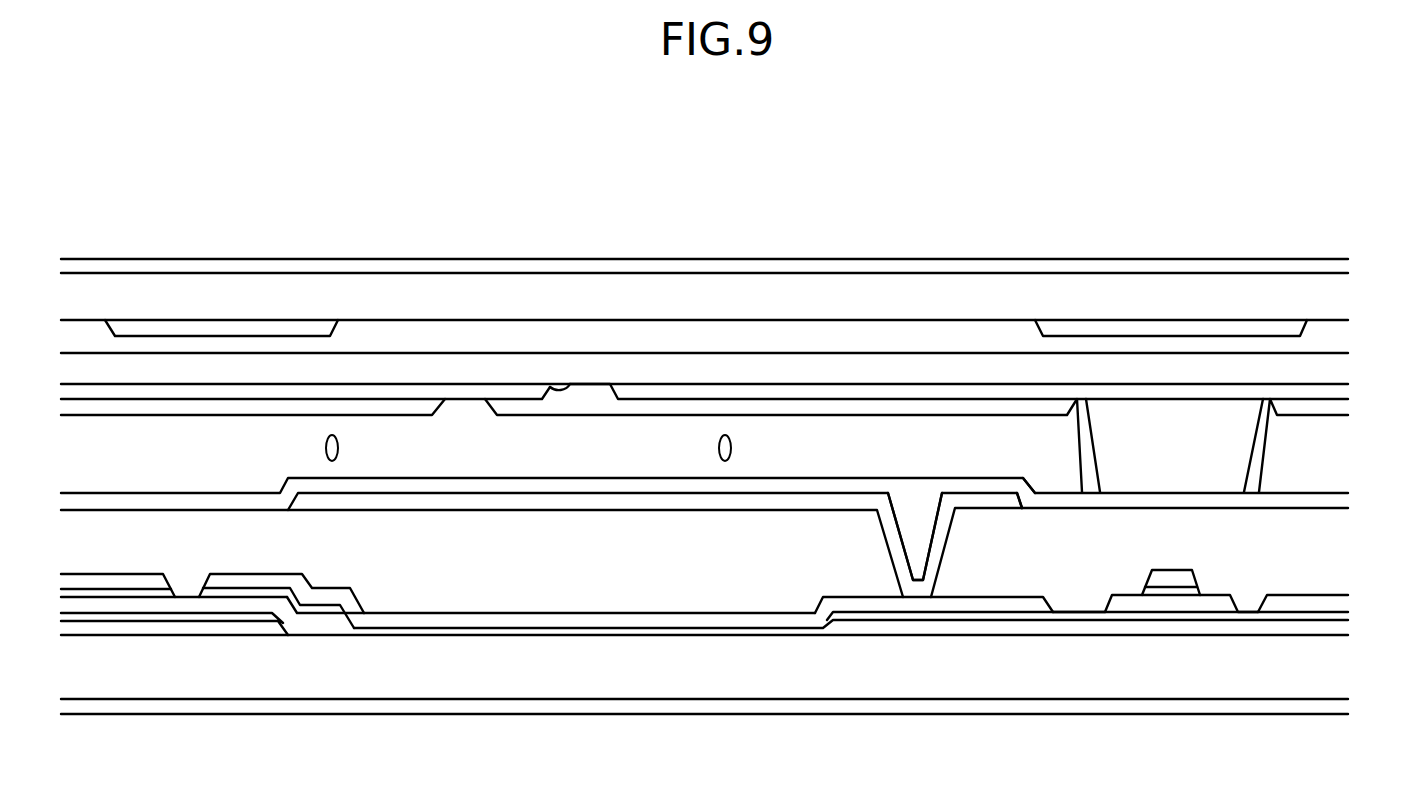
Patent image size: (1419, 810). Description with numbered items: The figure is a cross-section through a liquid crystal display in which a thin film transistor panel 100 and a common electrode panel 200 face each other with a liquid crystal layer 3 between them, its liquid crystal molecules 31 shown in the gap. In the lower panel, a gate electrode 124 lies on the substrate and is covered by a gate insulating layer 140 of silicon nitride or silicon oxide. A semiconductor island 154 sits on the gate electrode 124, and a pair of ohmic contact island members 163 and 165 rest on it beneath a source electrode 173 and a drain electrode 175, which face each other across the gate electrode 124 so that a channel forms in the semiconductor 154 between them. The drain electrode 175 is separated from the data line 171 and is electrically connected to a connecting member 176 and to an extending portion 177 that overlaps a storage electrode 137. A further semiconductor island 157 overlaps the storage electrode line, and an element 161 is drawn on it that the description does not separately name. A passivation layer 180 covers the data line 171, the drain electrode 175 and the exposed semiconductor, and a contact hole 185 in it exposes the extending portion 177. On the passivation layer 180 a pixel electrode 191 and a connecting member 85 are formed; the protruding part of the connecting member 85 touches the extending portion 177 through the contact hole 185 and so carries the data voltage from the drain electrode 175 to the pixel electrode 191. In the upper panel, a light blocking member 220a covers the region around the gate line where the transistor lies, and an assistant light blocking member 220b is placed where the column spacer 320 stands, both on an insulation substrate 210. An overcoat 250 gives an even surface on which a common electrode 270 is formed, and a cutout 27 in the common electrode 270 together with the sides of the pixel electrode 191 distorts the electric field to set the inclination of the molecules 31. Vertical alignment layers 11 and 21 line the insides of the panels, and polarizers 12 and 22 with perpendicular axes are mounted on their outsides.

The polarizer 22 is at (1340, 263).
The insulation substrate 210 is at (898, 288).
The light blocking member 220a is at (240, 328).
The assistant light blocking member 220b is at (1128, 328).
The overcoat 250 is at (492, 365).
The common electrode 270 is at (385, 392).
The cutout 27 is at (575, 382).
The alignment layer 21 is at (812, 407).
The column spacer 320 is at (1198, 418).
The common electrode panel 200 is at (1357, 272).
The liquid crystal layer 3 is at (1357, 413).
The thin film transistor panel 100 is at (1357, 507).
The liquid crystal molecules 31 is at (338, 448).
The alignment layer 11 is at (542, 487).
The pixel electrode 191 is at (602, 505).
The passivation layer 180 is at (683, 600).
The contact hole 185 is at (882, 526).
The source electrode 173 is at (115, 583).
The ohmic contact island member 163 is at (158, 593).
The gate electrode 124 is at (186, 628).
The ohmic contact island member 165 is at (227, 593).
The drain electrode 175 is at (258, 580).
The semiconductor island 154 is at (330, 622).
The gate insulating layer 140 is at (397, 635).
The connecting member 176 is at (752, 620).
The extending portion 177 is at (910, 603).
The storage electrode 137 is at (963, 625).
The connecting member 85 is at (1008, 503).
The data line 171 is at (1185, 580).
The semiconductor island 157 is at (1147, 603).
The ohmic contact stripe 161 is at (1172, 593).
The polarizer 12 is at (1343, 707).